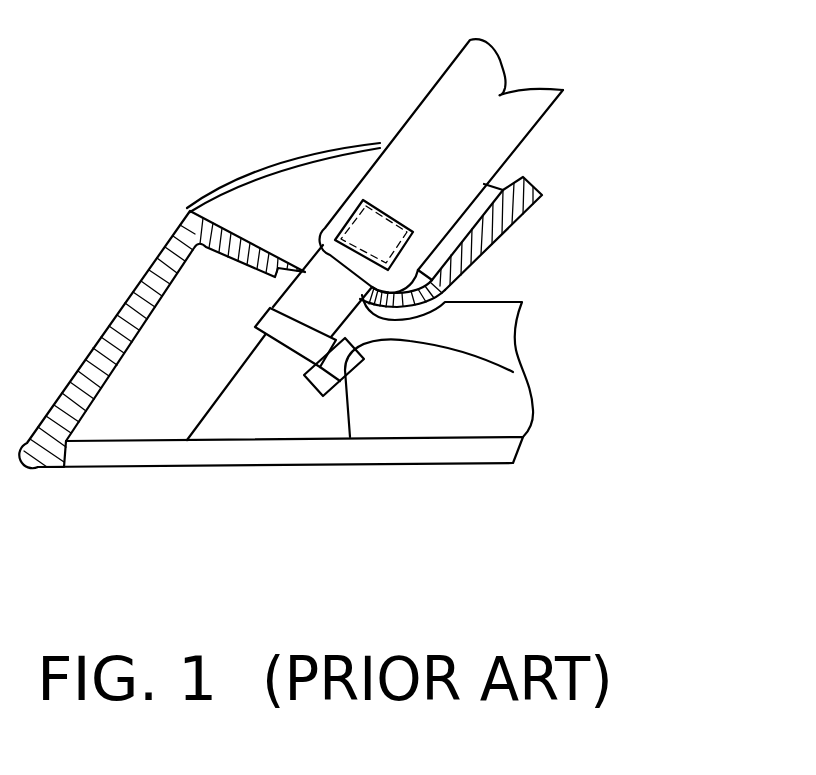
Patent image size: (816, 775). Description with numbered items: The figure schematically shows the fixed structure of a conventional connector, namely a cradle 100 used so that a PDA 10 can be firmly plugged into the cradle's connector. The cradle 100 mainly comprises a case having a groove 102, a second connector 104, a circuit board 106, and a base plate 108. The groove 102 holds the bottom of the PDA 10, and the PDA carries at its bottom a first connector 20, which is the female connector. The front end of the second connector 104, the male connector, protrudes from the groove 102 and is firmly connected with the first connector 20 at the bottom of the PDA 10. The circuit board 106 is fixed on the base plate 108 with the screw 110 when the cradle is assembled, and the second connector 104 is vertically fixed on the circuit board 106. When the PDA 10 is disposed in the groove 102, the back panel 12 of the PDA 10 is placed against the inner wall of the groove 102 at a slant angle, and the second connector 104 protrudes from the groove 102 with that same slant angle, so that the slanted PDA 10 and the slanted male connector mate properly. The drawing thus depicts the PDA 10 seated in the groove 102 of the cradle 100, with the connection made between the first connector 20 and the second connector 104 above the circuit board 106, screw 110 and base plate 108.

The PDA 10 is at (507, 73).
The back panel 12 is at (526, 157).
The first connector 20 is at (394, 217).
The cradle 100 is at (672, 553).
The groove 102 is at (492, 240).
The second connector 104 is at (308, 317).
The circuit board 106 is at (300, 358).
The base plate 108 is at (208, 430).
The screw 110 is at (513, 372).